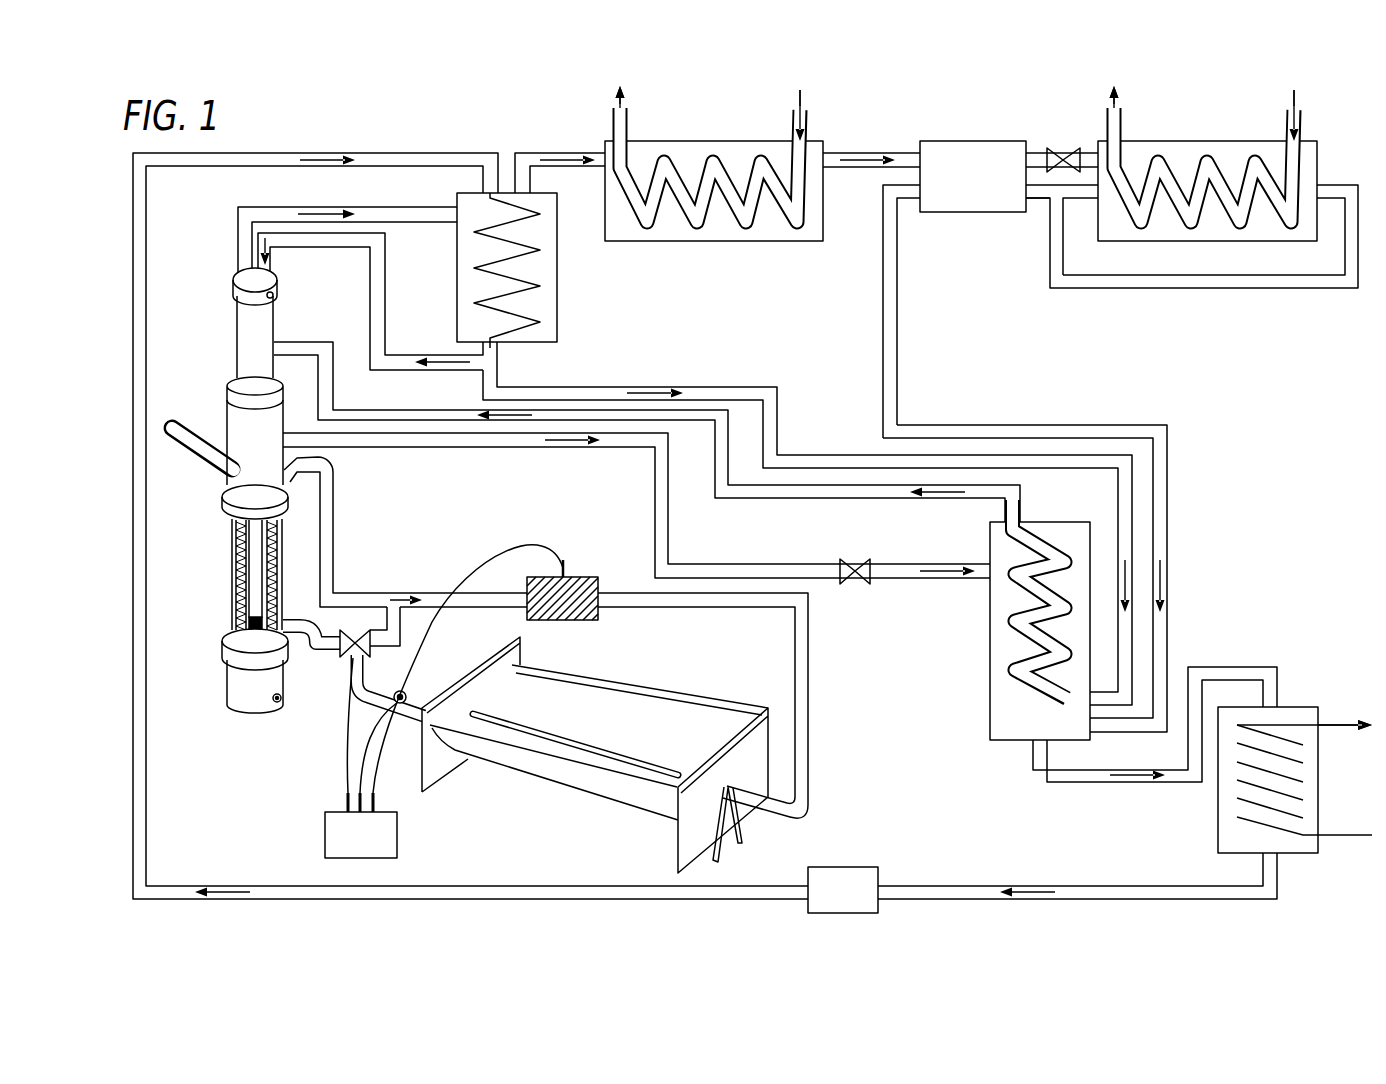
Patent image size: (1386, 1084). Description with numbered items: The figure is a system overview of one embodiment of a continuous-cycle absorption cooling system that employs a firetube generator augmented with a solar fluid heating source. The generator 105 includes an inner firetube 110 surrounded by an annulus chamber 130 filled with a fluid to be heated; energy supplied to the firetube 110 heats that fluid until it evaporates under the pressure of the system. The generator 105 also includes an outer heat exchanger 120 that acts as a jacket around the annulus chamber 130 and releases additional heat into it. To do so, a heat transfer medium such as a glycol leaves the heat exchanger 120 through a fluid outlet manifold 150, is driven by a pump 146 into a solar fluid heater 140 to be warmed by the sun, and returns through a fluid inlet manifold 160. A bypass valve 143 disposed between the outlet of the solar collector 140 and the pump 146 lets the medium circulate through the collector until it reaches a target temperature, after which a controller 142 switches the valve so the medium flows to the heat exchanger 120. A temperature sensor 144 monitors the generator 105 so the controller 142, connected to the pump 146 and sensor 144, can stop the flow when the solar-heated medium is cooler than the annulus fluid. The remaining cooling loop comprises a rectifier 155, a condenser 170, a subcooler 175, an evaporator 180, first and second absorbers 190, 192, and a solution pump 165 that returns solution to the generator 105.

The generator 105 is at (269, 490).
The inner firetube 110 is at (253, 552).
The outer heat exchanger 120 is at (277, 537).
The annulus chamber 130 is at (233, 602).
The solar fluid heater 140 is at (547, 763).
The controller 142 is at (370, 858).
The bypass valve 143 is at (340, 648).
The temperature sensor 144 is at (405, 692).
The pump 146 is at (573, 622).
The fluid outlet manifold 150 is at (284, 478).
The rectifier 155 is at (457, 297).
The fluid inlet manifold 160 is at (285, 620).
The solution pump 165 is at (825, 867).
The condenser 170 is at (670, 141).
The subcooler 175 is at (955, 141).
The evaporator 180 is at (1162, 141).
The first absorber 190 is at (990, 665).
The second absorber 192 is at (1218, 810).